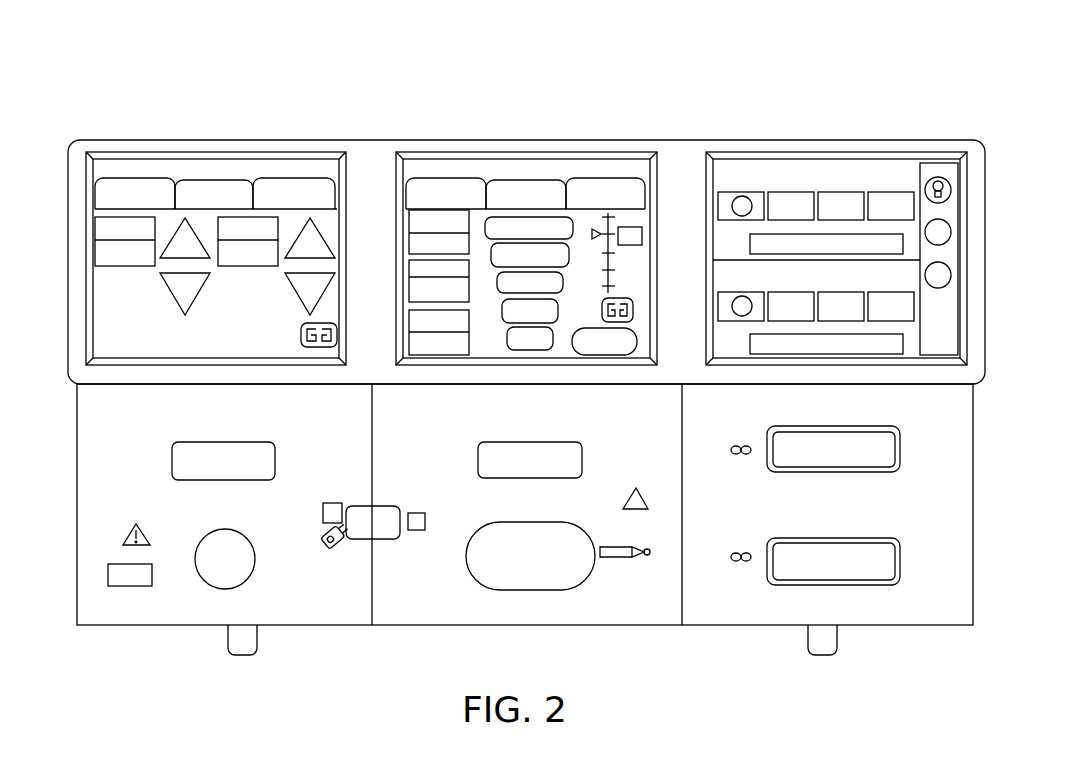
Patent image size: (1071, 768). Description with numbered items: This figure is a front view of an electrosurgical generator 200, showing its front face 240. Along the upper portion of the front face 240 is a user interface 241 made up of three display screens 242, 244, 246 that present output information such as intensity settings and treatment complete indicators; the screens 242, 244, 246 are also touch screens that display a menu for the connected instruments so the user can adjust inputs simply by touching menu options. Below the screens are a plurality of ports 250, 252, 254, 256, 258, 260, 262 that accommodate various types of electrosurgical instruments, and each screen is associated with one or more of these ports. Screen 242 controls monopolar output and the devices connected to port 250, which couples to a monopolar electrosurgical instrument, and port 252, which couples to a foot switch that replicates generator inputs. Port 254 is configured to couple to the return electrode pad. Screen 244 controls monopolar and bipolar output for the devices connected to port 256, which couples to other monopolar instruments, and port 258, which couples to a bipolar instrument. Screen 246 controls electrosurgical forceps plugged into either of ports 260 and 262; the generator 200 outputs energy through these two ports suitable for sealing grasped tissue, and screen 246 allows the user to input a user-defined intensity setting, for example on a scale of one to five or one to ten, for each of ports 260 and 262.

The electrosurgical generator 200 is at (865, 102).
The front face 240 is at (392, 140).
The user interface 241 is at (547, 118).
The display screen 242 is at (346, 163).
The display screen 244 is at (657, 210).
The display screen 246 is at (708, 360).
The port 250 is at (232, 442).
The port 252 is at (255, 558).
The port 254 is at (365, 507).
The port 256 is at (552, 442).
The port 258 is at (590, 575).
The port 260 is at (900, 448).
The port 262 is at (900, 561).